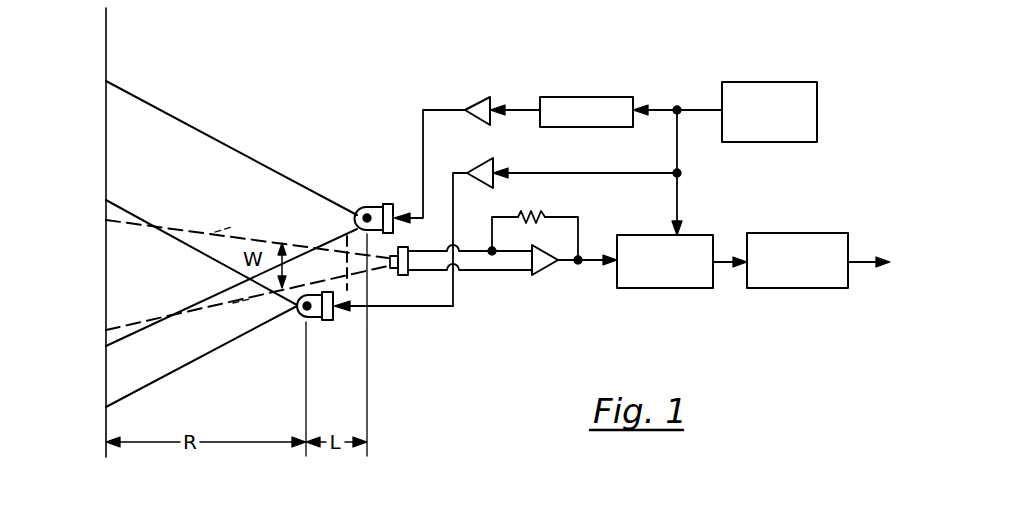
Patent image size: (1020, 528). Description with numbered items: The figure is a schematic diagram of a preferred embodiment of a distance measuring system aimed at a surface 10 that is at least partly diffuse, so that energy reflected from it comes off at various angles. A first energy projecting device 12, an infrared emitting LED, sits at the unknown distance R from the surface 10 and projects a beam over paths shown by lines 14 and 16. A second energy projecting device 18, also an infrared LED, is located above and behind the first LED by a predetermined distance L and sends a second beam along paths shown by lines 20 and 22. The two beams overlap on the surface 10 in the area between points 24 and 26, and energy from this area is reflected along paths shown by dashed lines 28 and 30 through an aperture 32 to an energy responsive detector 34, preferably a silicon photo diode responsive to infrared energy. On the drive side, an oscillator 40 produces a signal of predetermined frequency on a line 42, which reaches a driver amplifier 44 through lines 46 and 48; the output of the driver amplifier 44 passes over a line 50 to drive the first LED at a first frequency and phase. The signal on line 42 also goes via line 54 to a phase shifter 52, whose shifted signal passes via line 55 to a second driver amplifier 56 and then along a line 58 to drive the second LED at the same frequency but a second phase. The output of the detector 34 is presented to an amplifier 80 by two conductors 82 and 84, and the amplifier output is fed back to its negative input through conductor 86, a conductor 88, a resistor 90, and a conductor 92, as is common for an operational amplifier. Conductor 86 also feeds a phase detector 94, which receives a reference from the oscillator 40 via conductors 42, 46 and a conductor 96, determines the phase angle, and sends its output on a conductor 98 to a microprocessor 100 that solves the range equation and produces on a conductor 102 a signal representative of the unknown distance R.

The surface 10 is at (108, 31).
The first energy projecting device 12 is at (318, 322).
The path line 14 is at (166, 235).
The path line 16 is at (195, 360).
The second energy projecting device 18 is at (366, 205).
The path line 20 is at (196, 128).
The path line 22 is at (200, 301).
The point 24 is at (106, 204).
The point 26 is at (104, 347).
The dashed line 28 is at (218, 232).
The dashed line 30 is at (235, 302).
The aperture 32 is at (348, 258).
The energy responsive detector 34 is at (401, 276).
The oscillator 40 is at (765, 82).
The line 42 is at (700, 108).
The driver amplifier 44 is at (480, 160).
The line 46 is at (680, 140).
The line 48 is at (628, 174).
The line 50 is at (415, 307).
The phase shifter 52 is at (580, 97).
The line 54 is at (660, 113).
The line 55 is at (520, 109).
The second driver amplifier 56 is at (475, 102).
The line 58 is at (423, 117).
The amplifier 80 is at (548, 272).
The conductor 82 is at (478, 272).
The conductor 84 is at (472, 248).
The conductor 86 is at (572, 250).
The conductor 88 is at (572, 216).
The resistor 90 is at (528, 216).
The conductor 92 is at (500, 214).
The phase detector 94 is at (645, 288).
The conductor 96 is at (680, 203).
The conductor 98 is at (720, 268).
The microprocessor 100 is at (785, 233).
The conductor 102 is at (865, 258).